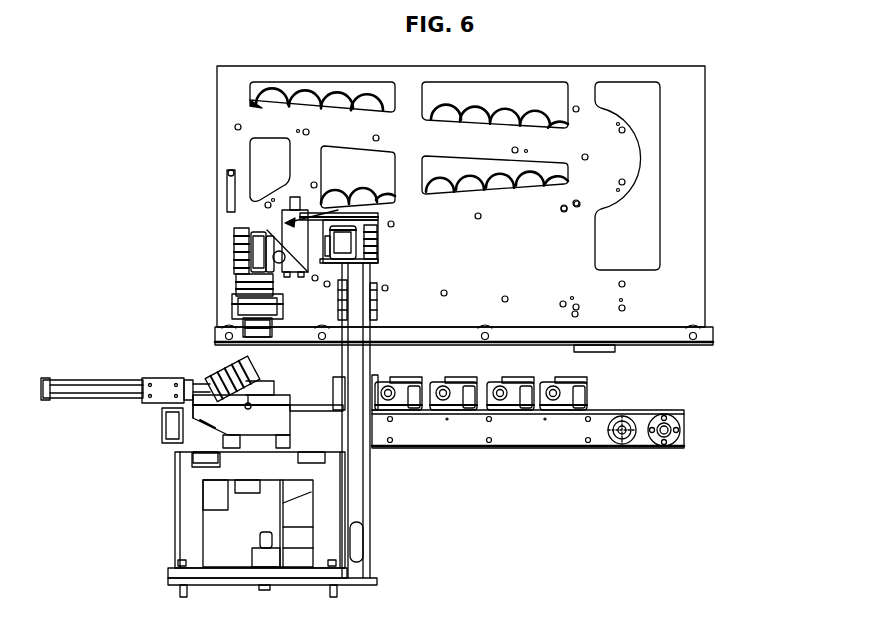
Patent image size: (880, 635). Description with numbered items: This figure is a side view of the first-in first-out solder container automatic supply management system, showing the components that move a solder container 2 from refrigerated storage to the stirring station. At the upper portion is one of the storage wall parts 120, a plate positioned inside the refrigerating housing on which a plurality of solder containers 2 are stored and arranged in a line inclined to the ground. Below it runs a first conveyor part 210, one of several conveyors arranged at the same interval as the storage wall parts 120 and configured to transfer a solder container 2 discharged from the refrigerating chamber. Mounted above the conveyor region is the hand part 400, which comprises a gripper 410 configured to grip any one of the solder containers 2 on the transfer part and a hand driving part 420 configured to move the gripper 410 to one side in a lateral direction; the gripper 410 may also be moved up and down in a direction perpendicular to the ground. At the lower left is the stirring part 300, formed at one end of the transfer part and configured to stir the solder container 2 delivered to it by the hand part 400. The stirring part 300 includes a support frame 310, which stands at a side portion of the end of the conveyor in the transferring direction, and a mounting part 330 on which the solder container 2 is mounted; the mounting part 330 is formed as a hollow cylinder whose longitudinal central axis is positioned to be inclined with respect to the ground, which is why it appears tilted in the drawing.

The storage wall part 120 is at (708, 90).
The hand part 400 is at (137, 198).
The hand driving part 420 is at (238, 231).
The gripper 410 is at (232, 284).
The solder container 2 is at (230, 332).
The stirring part 300 is at (165, 476).
The mounting part 330 is at (205, 376).
The support frame 310 is at (190, 540).
The first conveyor part 210 is at (541, 436).